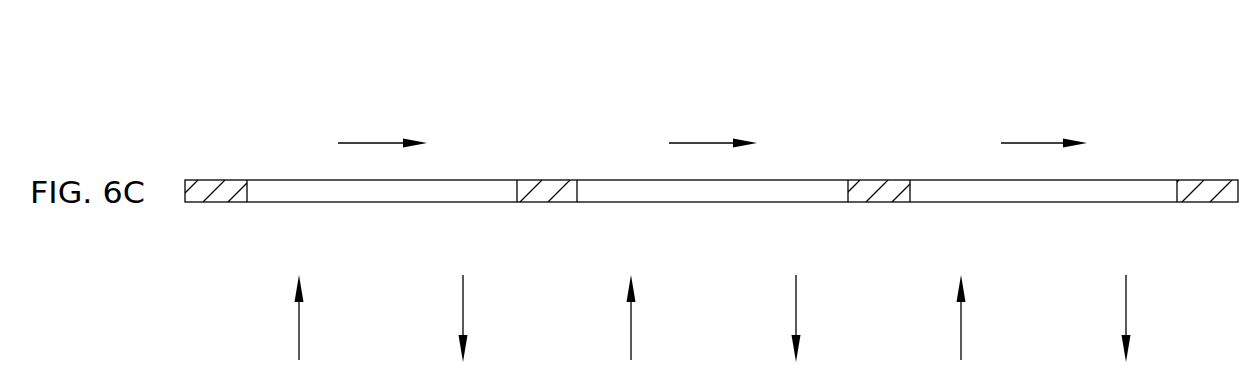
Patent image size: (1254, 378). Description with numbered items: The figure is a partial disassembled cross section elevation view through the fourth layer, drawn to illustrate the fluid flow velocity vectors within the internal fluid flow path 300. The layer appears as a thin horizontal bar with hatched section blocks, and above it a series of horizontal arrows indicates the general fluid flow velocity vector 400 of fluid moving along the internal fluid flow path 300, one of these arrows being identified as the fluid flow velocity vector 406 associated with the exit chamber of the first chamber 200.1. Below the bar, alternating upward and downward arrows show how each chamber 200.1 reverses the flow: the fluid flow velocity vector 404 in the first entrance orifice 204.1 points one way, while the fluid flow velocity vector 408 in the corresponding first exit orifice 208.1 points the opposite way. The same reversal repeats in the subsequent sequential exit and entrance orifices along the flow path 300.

The internal fluid flow path 300 is at (262, 163).
The first chamber 200.1 is at (302, 179).
The fluid flow velocity vector 406 is at (367, 143).
The general fluid flow velocity vector 400 is at (1050, 116).
The fluid flow velocity vector 404 is at (297, 325).
The fluid flow velocity vector 408 is at (465, 305).
The first entrance orifice 204.1 is at (233, 371).
The first exit orifice 208.1 is at (398, 371).